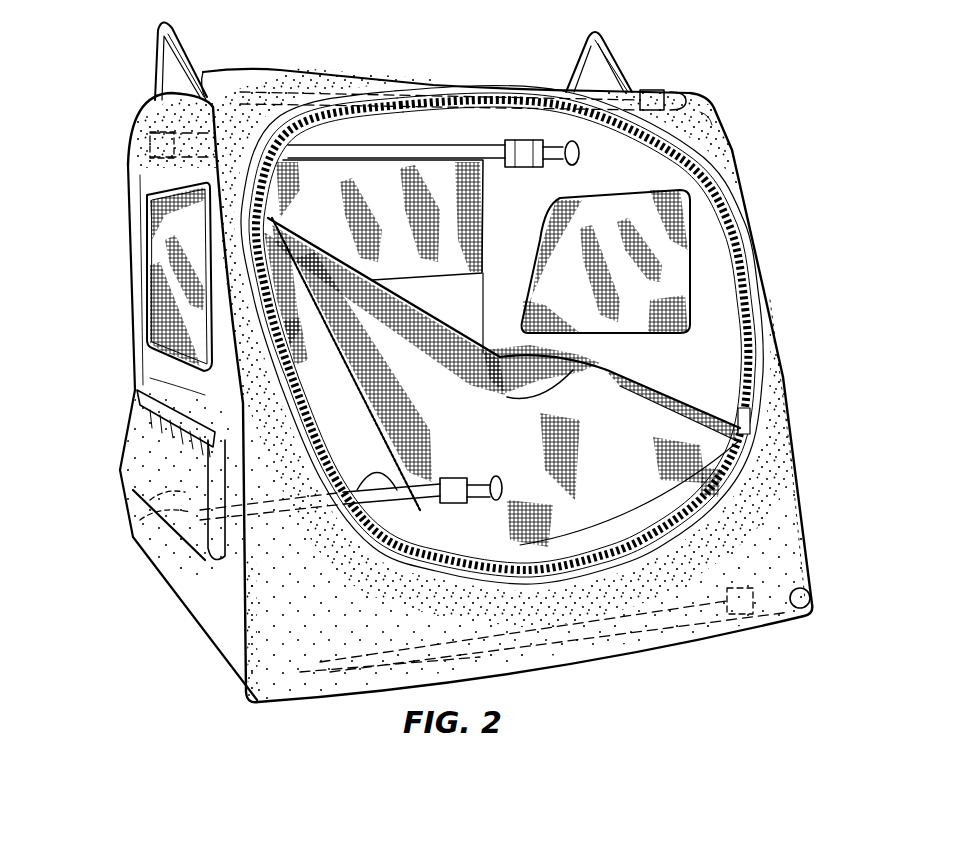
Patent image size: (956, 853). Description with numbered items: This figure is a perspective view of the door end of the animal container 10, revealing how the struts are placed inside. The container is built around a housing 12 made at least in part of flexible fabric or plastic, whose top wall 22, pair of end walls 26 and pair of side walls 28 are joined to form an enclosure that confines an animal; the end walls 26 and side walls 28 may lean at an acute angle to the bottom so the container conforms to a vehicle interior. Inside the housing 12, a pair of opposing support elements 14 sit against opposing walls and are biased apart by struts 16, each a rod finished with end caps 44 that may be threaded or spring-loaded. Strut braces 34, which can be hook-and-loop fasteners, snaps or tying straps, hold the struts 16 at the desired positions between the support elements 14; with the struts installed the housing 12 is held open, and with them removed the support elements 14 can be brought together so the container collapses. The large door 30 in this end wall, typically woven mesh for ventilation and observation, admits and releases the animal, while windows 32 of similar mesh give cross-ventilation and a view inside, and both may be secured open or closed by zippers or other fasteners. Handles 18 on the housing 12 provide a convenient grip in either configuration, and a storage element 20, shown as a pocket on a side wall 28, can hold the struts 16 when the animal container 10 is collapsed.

The animal container 10 is at (745, 190).
The housing 12 is at (705, 120).
The opposing support elements 14 is at (717, 343).
The struts 16 is at (450, 146).
The handles 18 is at (187, 53).
The storage element 20 is at (133, 440).
The top wall 22 is at (283, 73).
The end walls 26 is at (777, 503).
The side walls 28 is at (153, 375).
The door 30 is at (465, 463).
The windows 32 is at (147, 232).
The strut braces 34 is at (147, 110).
The end caps 44 is at (580, 152).